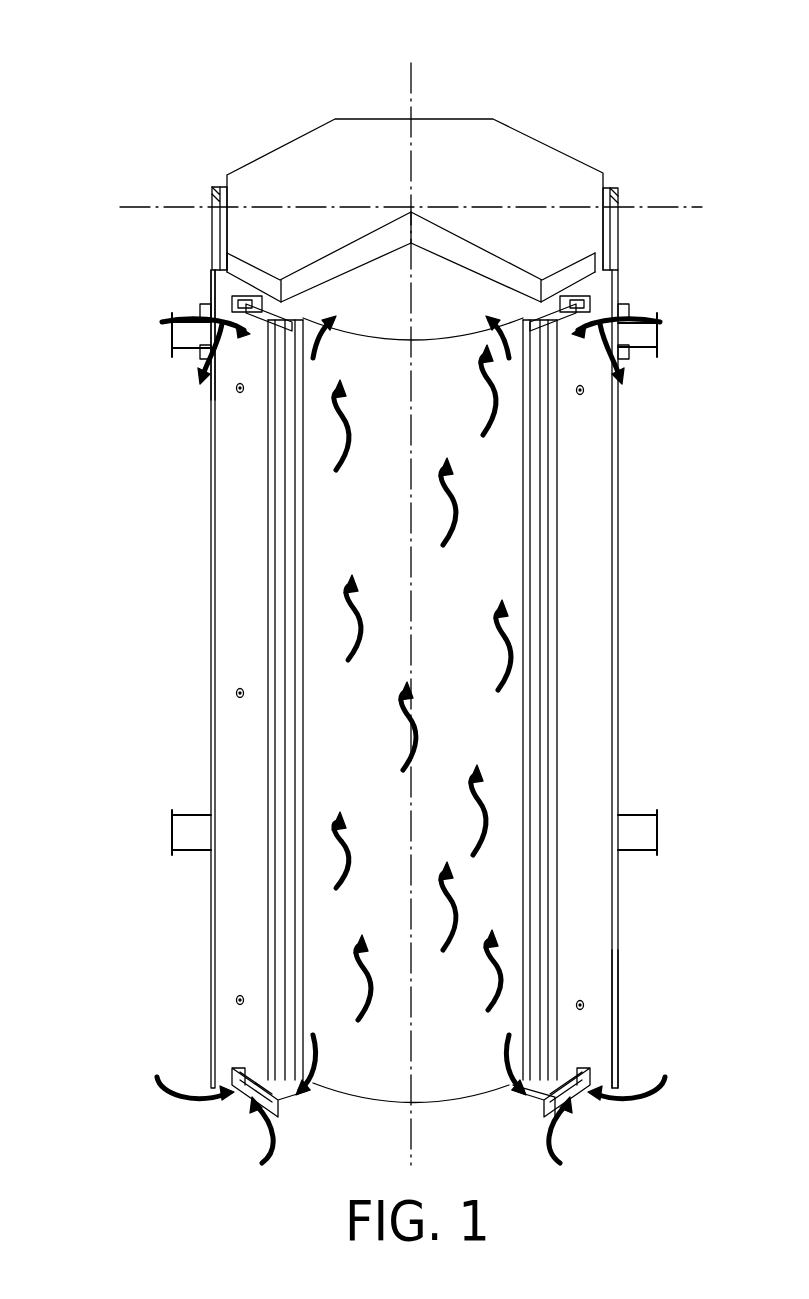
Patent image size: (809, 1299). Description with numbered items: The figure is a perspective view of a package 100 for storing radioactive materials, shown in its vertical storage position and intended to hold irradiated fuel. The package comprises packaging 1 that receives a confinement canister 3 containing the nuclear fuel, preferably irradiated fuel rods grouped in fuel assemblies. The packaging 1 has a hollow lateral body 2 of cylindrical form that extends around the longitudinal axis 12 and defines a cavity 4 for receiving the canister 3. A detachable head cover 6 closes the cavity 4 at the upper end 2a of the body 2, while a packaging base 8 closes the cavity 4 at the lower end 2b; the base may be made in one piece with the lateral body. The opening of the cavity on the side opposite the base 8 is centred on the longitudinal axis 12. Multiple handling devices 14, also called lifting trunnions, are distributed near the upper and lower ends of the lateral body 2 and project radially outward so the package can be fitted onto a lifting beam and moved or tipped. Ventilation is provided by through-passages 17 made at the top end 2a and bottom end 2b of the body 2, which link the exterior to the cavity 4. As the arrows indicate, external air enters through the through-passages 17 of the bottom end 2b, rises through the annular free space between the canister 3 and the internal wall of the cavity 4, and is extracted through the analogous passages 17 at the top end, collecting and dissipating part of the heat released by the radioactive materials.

The package 100 is at (633, 57).
The packaging 1 is at (232, 159).
The longitudinal axis 12 is at (413, 80).
The detachable head cover 6 is at (544, 159).
The hollow lateral body 2 is at (234, 632).
The upper end 2a is at (220, 285).
The lower end 2b is at (603, 1038).
The cavity 4 is at (302, 496).
The confinement canister 3 is at (500, 527).
The handling devices 14 is at (175, 352).
The through-passages 17 is at (240, 308).
The packaging base 8 is at (524, 1106).